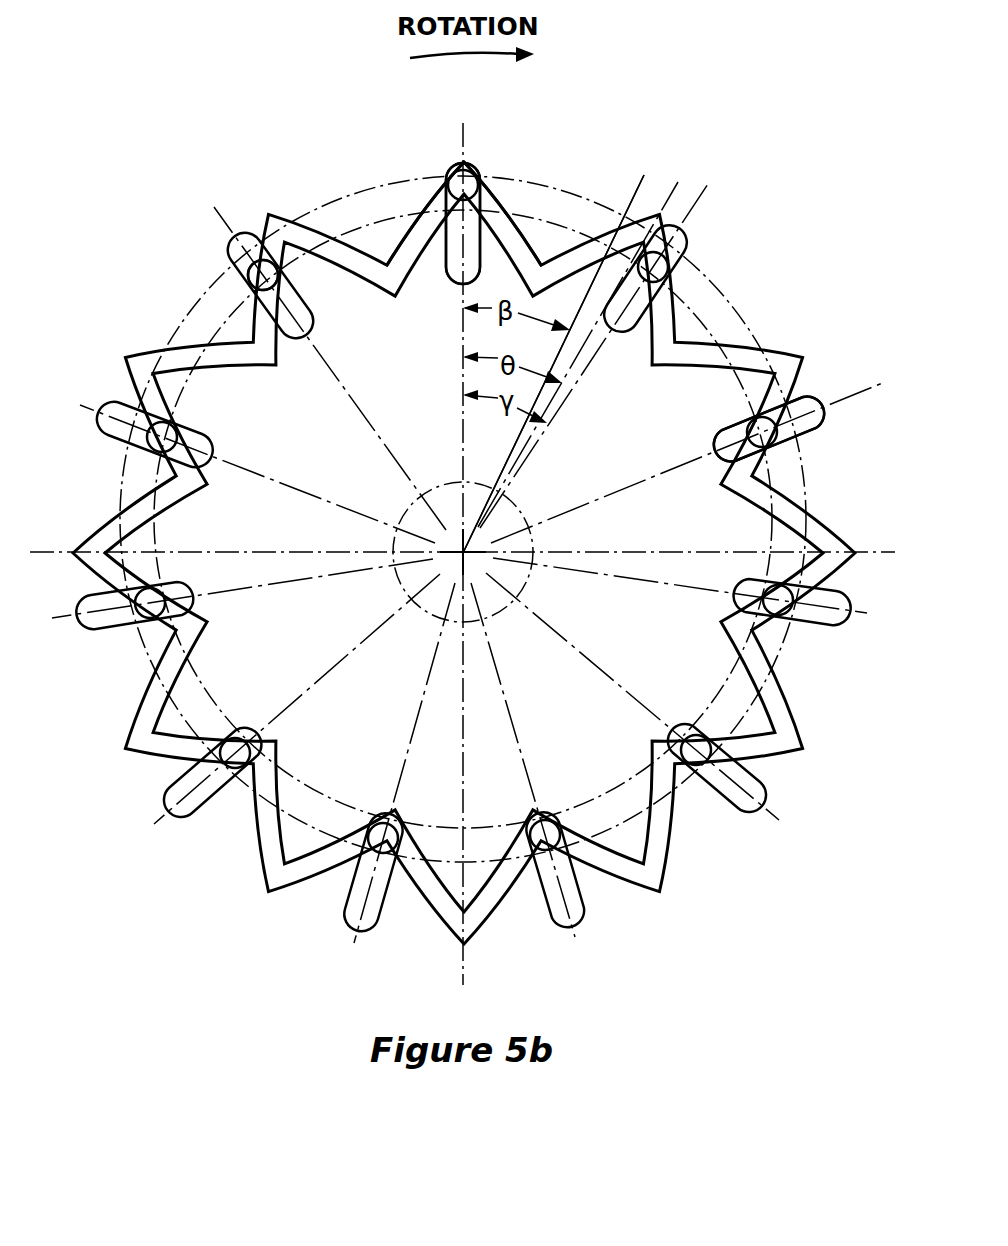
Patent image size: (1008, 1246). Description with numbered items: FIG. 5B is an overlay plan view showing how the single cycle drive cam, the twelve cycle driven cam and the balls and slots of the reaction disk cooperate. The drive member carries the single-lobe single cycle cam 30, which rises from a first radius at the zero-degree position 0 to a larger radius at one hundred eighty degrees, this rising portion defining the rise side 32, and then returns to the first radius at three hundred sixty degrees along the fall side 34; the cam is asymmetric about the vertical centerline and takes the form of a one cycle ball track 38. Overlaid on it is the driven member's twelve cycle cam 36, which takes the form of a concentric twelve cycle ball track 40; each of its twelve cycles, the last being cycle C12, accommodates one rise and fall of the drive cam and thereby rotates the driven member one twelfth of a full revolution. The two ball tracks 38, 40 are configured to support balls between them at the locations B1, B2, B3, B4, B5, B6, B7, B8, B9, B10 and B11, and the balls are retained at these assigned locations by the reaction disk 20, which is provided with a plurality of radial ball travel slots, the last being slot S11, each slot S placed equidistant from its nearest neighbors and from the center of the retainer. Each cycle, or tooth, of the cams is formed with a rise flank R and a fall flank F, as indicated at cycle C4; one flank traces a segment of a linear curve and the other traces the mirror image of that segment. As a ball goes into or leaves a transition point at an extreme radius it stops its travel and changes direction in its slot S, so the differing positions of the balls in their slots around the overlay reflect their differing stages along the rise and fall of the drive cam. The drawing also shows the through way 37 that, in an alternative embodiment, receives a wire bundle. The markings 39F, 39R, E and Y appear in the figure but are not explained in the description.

The reaction disk 20 is at (256, 269).
The single cycle cam 30 is at (410, 172).
The rise side 32 is at (209, 861).
The fall side 34 is at (797, 783).
The 12 cycle cam 36 is at (352, 288).
The through way 37 is at (570, 364).
The one cycle ball track 38 is at (712, 331).
The front tooth face 39F is at (397, 250).
The rear tooth face 39R is at (522, 237).
The concentric 12 cycle ball track 40 is at (700, 335).
The ball location B1 is at (312, 368).
The ball location B2 is at (257, 472).
The ball location B3 is at (242, 613).
The ball location B4 is at (297, 703).
The ball location B5 is at (399, 763).
The ball location B6 is at (527, 760).
The ball location B7 is at (632, 703).
The ball location B8 is at (680, 611).
The ball location B9 is at (688, 462).
The ball location B10 is at (614, 356).
The ball location B11 is at (487, 210).
The cycle C12 is at (508, 210).
The cycle C4 is at (127, 749).
The eccentric line E is at (616, 222).
The reference point Y is at (676, 262).
The slot S is at (817, 405).
The radial ball travel slot S11 is at (443, 243).
The rise flank R is at (140, 703).
The fall flank F is at (157, 760).
The zero-degree position 0 is at (465, 828).